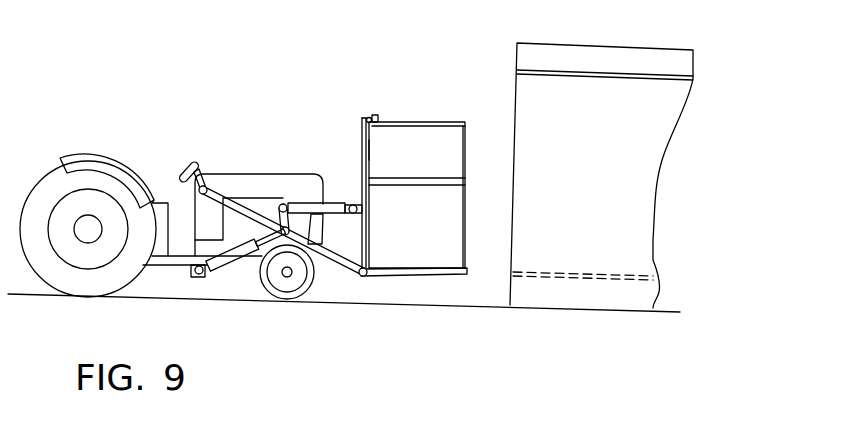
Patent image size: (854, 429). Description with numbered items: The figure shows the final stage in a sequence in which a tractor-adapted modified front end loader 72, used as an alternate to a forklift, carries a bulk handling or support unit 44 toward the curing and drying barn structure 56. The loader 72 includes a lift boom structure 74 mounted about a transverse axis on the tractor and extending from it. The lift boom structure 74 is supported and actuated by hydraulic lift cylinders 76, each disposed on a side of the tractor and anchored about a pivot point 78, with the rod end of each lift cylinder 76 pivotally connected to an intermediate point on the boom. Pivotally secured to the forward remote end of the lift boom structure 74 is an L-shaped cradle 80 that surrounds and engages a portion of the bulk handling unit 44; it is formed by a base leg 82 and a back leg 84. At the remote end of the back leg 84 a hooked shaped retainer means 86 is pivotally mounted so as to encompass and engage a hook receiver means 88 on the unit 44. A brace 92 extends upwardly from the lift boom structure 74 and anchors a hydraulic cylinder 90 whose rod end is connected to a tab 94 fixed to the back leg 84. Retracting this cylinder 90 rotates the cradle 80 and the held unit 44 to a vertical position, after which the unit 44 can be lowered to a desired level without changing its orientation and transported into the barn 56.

The bulk handling or support unit 44 is at (446, 118).
The curing and drying barn structure 56 is at (579, 41).
The modified front end loader 72 is at (330, 196).
The lift boom structure 74 is at (309, 270).
The hydraulic lift cylinders 76 is at (246, 279).
The pivot point 78 is at (182, 297).
The L-shaped cradle 80 is at (355, 176).
The base leg 82 is at (415, 276).
The back leg 84 is at (397, 112).
The hooked shaped retainer means 86 is at (342, 90).
The hook receiver means 88 is at (338, 100).
The hydraulic cylinder 90 is at (312, 178).
The brace 92 is at (281, 209).
The tab 94 is at (424, 201).